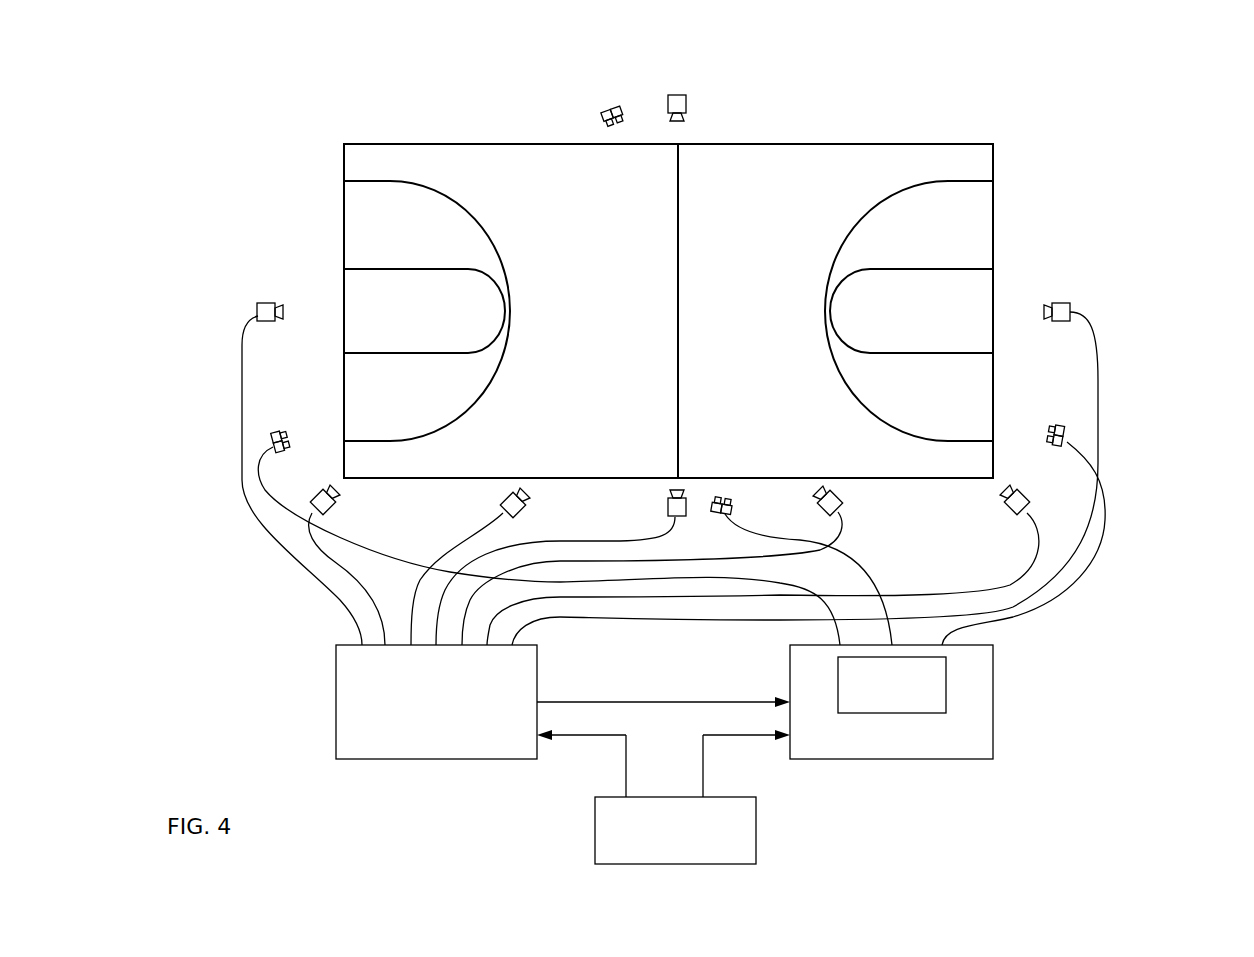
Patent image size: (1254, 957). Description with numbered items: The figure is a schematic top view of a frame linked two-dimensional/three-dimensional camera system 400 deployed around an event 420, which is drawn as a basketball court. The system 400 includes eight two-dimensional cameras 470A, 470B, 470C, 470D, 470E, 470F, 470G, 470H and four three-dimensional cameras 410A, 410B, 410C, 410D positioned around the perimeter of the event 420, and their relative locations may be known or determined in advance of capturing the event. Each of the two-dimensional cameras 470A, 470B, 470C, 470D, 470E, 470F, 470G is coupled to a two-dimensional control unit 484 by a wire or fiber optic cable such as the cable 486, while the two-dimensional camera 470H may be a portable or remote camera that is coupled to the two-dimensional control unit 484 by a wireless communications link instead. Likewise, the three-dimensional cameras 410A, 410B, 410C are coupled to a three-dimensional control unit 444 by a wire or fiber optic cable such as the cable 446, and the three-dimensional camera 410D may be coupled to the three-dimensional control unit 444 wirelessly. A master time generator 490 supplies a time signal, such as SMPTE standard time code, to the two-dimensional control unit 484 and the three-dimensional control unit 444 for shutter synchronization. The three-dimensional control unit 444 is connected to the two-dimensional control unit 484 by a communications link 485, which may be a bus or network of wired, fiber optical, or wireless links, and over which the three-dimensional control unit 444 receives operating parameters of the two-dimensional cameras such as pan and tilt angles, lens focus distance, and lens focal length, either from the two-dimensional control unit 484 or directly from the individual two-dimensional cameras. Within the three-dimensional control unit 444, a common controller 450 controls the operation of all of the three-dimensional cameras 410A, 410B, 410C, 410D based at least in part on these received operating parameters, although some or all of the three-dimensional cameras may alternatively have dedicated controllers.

The frame linked 2D/3D camera system 400 is at (216, 72).
The event 420 is at (976, 121).
The 2D camera 470A is at (257, 304).
The 2D camera 470B is at (313, 499).
The 2D camera 470C is at (501, 512).
The 2D camera 470D is at (668, 487).
The 2D camera 470E is at (841, 506).
The 2D camera 470F is at (1030, 503).
The 2D camera 470G is at (1071, 304).
The 2D camera 470H is at (687, 95).
The 3D camera 410A is at (272, 432).
The 3D camera 410B is at (735, 495).
The 3D camera 410C is at (1065, 425).
The 3D camera 410D is at (600, 108).
The cable 486 is at (337, 592).
The cable 446 is at (1047, 613).
The 2D control unit 484 is at (362, 759).
The 3D control unit 444 is at (840, 759).
The controller 450 is at (892, 685).
The communications link 485 is at (607, 702).
The master time generator 490 is at (595, 842).